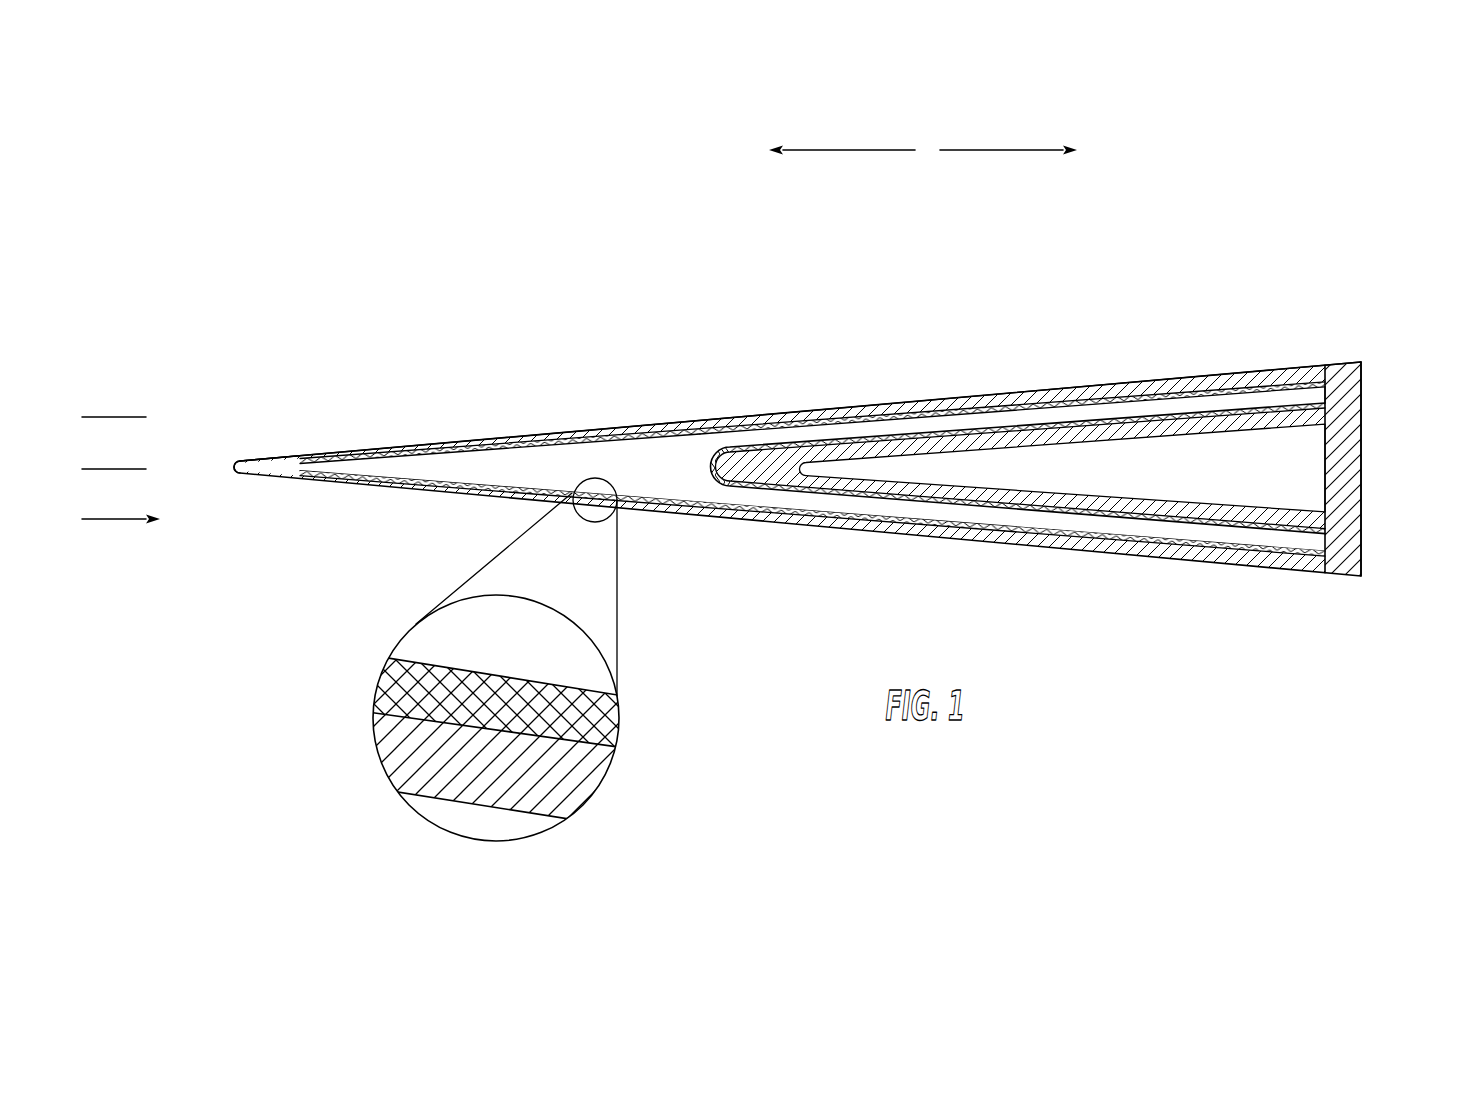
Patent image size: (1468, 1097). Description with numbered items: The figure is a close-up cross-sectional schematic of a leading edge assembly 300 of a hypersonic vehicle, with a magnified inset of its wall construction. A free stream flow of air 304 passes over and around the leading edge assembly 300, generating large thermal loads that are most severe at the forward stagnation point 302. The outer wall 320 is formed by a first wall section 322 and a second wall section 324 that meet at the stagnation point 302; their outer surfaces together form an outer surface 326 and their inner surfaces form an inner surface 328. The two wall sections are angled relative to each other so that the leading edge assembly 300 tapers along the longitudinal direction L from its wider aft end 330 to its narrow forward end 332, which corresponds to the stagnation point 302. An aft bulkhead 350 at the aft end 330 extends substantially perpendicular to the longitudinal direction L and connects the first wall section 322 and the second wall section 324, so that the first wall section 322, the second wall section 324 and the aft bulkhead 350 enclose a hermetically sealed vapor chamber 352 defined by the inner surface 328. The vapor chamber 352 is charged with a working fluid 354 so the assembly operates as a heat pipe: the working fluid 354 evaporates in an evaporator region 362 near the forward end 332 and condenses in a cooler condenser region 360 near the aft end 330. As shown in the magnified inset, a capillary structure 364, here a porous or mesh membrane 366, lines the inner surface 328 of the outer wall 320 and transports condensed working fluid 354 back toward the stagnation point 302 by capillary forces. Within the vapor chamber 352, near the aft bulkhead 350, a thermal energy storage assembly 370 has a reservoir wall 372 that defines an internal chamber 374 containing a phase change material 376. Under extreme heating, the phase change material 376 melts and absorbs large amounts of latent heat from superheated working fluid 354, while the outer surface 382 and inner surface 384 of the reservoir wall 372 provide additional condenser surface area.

The leading edge assembly 300 is at (769, 517).
The stagnation point 302 is at (226, 467).
The free stream flow of air 304 is at (105, 522).
The outer wall 320 is at (886, 403).
The first wall section 322 is at (758, 422).
The second wall section 324 is at (870, 521).
The outer surface 326 is at (681, 420).
The inner surface 328 is at (656, 448).
The aft end 330 is at (1357, 289).
The forward end 332 is at (236, 411).
The aft bulkhead 350 is at (1353, 533).
The vapor chamber 352 is at (527, 480).
The working fluid 354 is at (590, 462).
The condenser region 360 is at (1285, 397).
The evaporator region 362 is at (371, 461).
The capillary structure 364 is at (1124, 517).
The porous or mesh membrane 366 is at (393, 672).
The thermal energy storage assembly 370 is at (1067, 451).
The reservoir wall 372 is at (1318, 417).
The internal chamber 374 is at (1209, 480).
The phase change material 376 is at (1097, 464).
The outer surface of reservoir wall 382 is at (823, 442).
The inner surface of reservoir wall 384 is at (1278, 441).
The longitudinal direction L is at (923, 151).